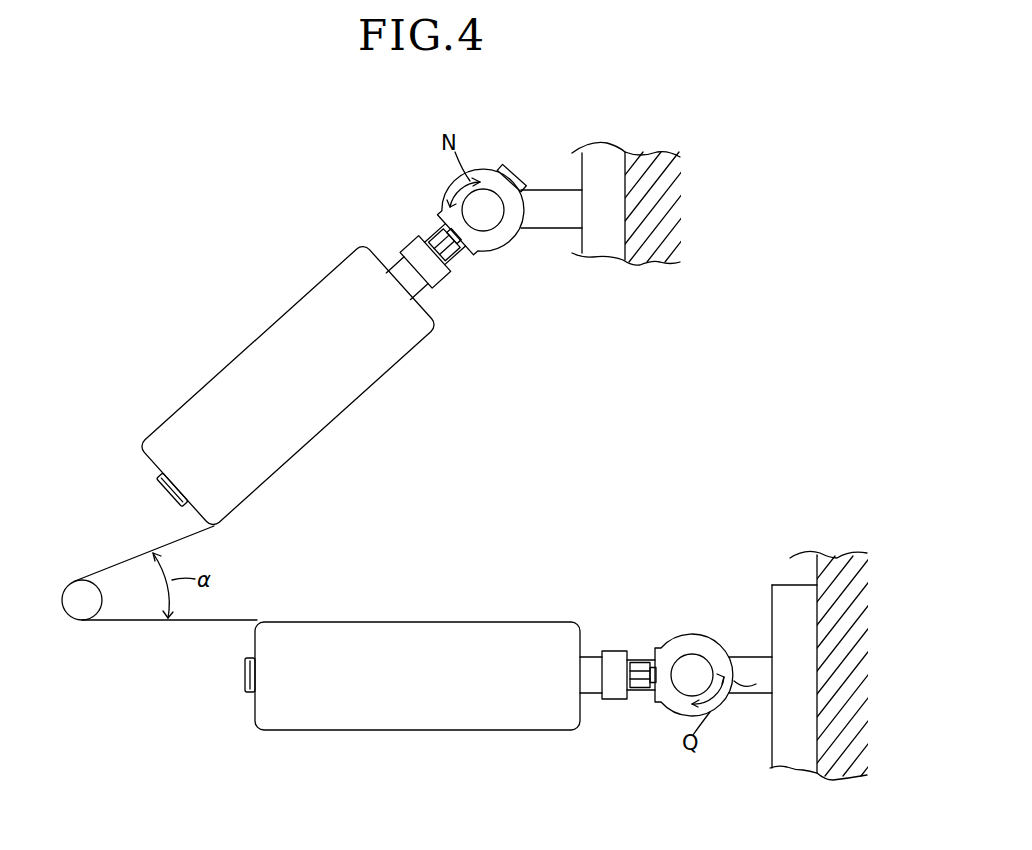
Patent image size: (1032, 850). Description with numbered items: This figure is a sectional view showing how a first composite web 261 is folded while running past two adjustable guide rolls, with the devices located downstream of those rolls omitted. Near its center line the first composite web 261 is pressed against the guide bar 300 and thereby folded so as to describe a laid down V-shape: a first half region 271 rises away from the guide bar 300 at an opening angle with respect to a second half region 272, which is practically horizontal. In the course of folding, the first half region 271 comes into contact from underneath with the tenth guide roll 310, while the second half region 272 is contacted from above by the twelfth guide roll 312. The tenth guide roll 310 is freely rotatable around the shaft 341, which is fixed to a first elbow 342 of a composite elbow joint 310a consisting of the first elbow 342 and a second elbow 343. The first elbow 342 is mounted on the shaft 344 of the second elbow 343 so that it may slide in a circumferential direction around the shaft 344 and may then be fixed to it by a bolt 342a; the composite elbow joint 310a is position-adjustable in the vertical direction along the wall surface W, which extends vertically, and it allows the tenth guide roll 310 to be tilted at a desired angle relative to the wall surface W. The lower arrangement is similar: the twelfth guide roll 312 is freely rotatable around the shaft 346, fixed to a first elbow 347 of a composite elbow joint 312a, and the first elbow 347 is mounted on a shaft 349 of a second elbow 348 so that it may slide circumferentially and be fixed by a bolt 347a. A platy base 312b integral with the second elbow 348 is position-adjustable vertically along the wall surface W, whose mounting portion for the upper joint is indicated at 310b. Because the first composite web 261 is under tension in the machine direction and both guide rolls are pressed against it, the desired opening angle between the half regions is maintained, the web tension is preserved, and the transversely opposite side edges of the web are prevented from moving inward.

The guide bar 300 is at (93, 603).
The first composite web 261 is at (122, 562).
The first half region 271 is at (202, 535).
The second half region 272 is at (295, 618).
The tenth guide roll 310 is at (305, 290).
The composite elbow joint 310a is at (572, 168).
The bracket of first cylinder 310b is at (587, 240).
The twelfth guide roll 312 is at (307, 732).
The composite elbow joint 312a is at (693, 598).
The platy base 312b is at (773, 753).
The shaft 341 is at (422, 283).
The first elbow 342 is at (488, 243).
The bolt 342a is at (505, 164).
The second elbow 343 is at (562, 218).
The shaft 344 is at (467, 210).
The shaft 346 is at (592, 667).
The first elbow 347 is at (678, 648).
The bolt 347a is at (737, 681).
The second elbow 348 is at (752, 655).
The shaft 349 is at (685, 688).
The wall surface W is at (626, 176).